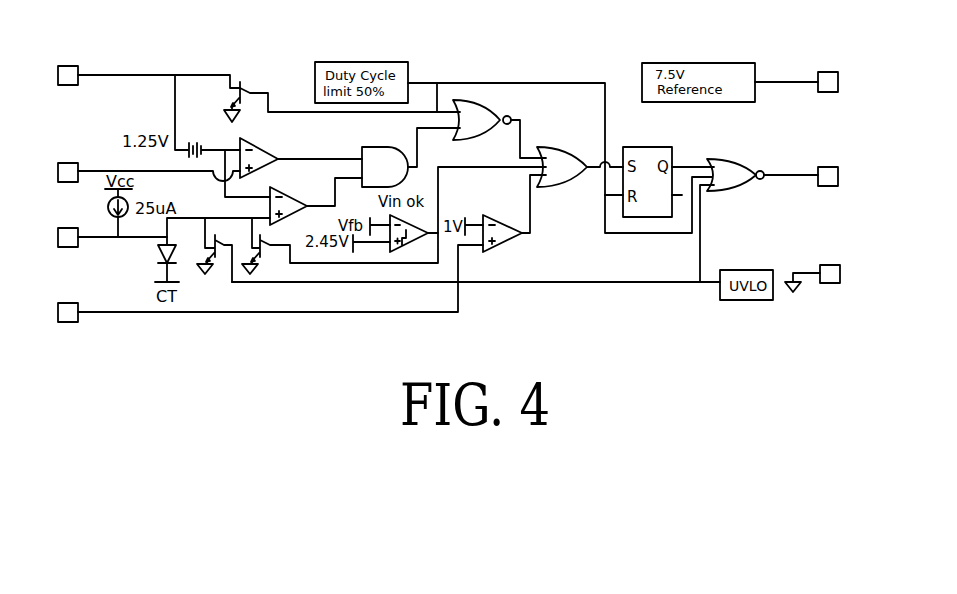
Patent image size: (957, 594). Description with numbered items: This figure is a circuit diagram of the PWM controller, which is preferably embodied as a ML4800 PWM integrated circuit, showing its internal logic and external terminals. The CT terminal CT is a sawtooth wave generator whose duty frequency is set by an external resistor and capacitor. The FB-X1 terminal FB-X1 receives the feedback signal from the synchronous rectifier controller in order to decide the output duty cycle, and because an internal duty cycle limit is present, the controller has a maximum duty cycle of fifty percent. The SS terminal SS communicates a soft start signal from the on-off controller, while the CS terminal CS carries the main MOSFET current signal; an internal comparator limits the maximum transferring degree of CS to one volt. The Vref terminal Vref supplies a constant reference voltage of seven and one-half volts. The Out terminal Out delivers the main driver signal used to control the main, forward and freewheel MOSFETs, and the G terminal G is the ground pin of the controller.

The CT terminal CT is at (149, 71).
The FB-X1 terminal FB-X1 is at (149, 167).
The SS terminal SS is at (164, 232).
The CS terminal CS is at (270, 283).
The Vref terminal Vref is at (799, 68).
The Out terminal Out is at (805, 164).
The ground pin G is at (812, 267).